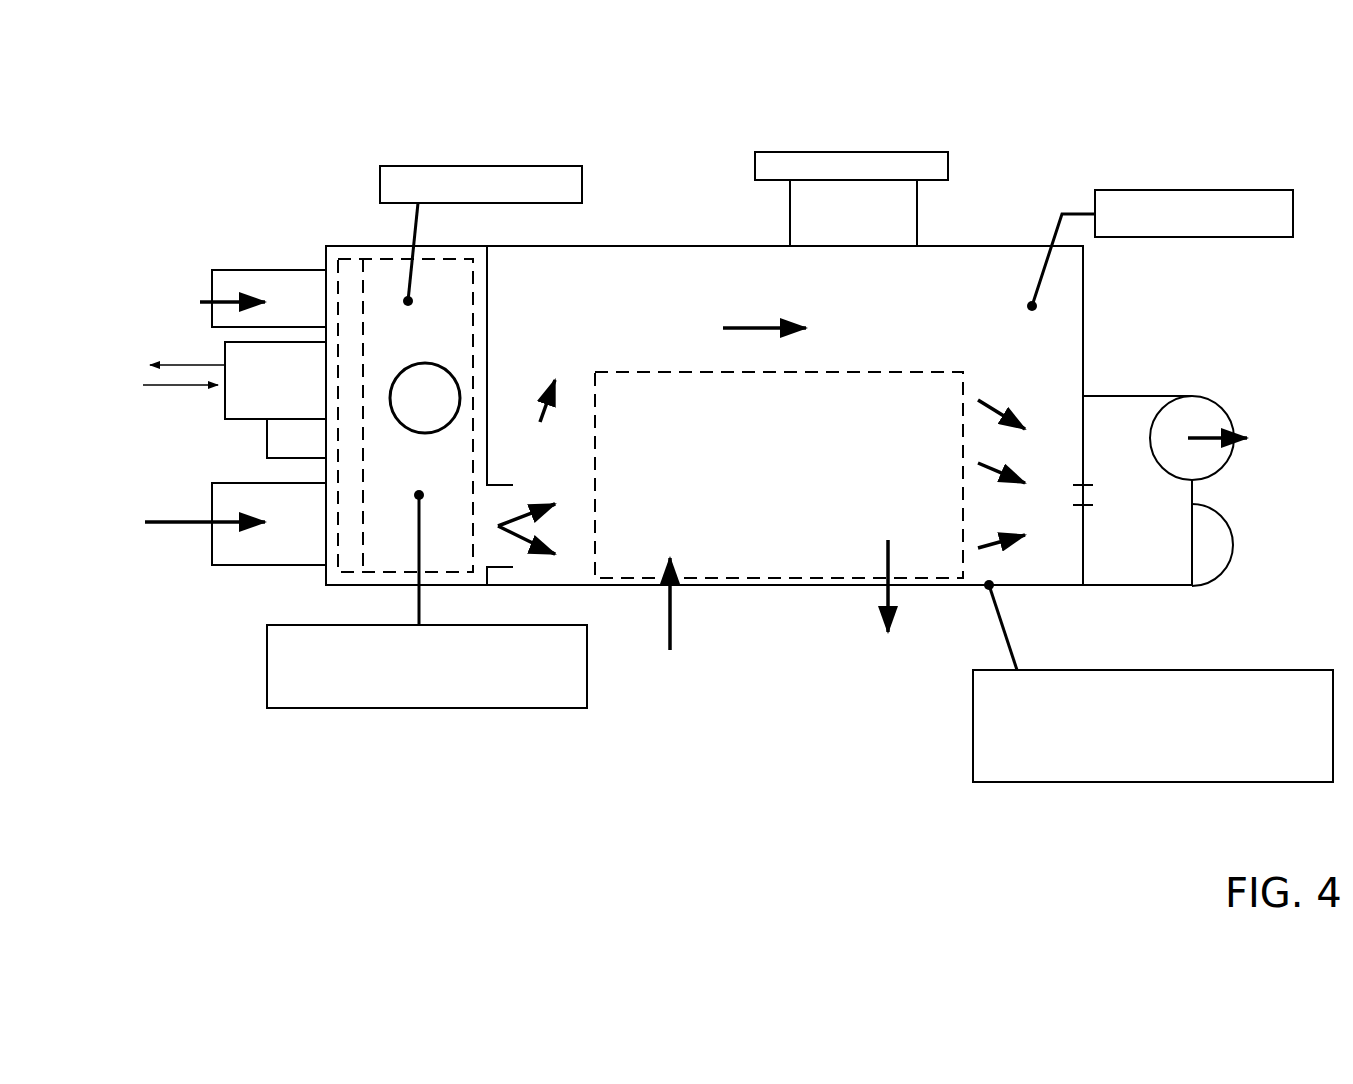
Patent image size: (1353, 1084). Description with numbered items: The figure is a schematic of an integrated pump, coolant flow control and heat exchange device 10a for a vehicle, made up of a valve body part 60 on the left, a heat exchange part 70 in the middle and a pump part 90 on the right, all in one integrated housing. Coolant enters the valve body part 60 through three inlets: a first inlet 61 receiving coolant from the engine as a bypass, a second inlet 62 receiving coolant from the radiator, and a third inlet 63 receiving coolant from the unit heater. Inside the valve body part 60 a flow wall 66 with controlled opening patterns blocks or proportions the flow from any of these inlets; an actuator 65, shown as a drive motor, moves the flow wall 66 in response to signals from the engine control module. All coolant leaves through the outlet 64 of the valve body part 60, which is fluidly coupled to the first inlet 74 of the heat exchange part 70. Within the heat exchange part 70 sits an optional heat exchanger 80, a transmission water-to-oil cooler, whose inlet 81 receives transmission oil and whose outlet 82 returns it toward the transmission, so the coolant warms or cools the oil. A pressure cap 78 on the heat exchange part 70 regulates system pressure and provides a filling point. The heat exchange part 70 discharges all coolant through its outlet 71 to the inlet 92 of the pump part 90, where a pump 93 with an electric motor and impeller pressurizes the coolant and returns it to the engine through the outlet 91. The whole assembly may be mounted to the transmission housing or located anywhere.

The integrated pump, coolant flow control and heat exchange device 10a is at (392, 127).
The valve body part 60 is at (357, 213).
The first inlet 61 is at (243, 270).
The second inlet 62 is at (235, 565).
The third inlet 63 is at (432, 389).
The outlet 64 is at (482, 325).
The first inlet 74 is at (502, 485).
The actuator 65 is at (238, 419).
The flow wall 66 is at (346, 262).
The heat exchange part 70 is at (999, 214).
The outlet 71 is at (1112, 480).
The inlet 92 is at (1085, 494).
The pressure cap 78 is at (935, 152).
The heat exchanger 80 is at (660, 372).
The inlet 81 is at (676, 590).
The outlet 82 is at (893, 590).
The pump part 90 is at (1143, 588).
The outlet 91 is at (1218, 405).
The pump 93 is at (1222, 545).